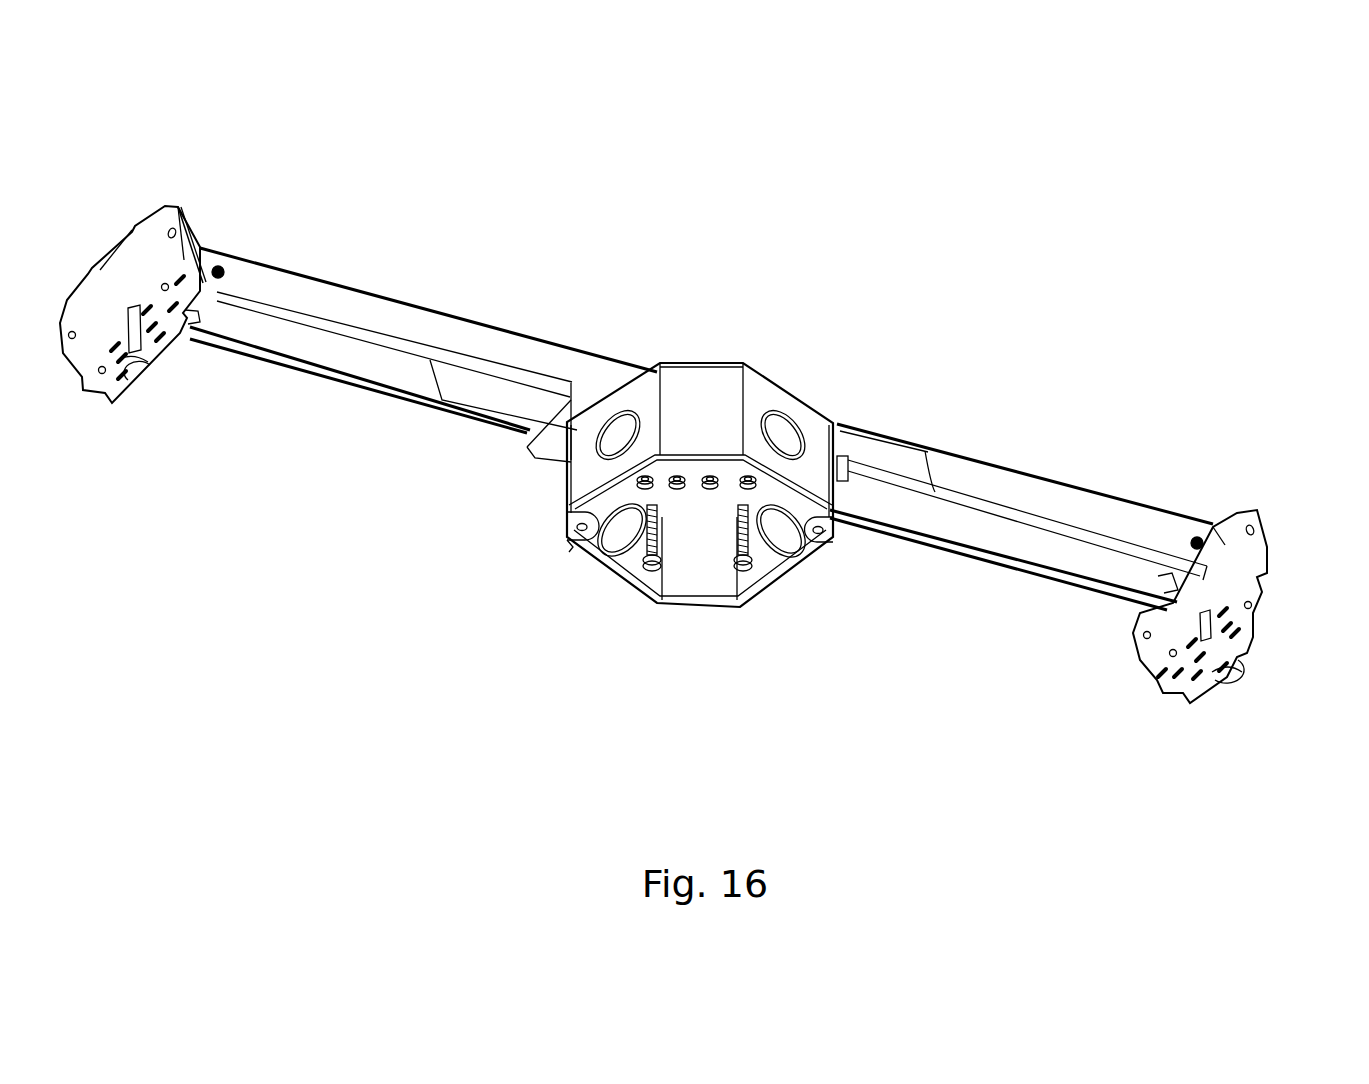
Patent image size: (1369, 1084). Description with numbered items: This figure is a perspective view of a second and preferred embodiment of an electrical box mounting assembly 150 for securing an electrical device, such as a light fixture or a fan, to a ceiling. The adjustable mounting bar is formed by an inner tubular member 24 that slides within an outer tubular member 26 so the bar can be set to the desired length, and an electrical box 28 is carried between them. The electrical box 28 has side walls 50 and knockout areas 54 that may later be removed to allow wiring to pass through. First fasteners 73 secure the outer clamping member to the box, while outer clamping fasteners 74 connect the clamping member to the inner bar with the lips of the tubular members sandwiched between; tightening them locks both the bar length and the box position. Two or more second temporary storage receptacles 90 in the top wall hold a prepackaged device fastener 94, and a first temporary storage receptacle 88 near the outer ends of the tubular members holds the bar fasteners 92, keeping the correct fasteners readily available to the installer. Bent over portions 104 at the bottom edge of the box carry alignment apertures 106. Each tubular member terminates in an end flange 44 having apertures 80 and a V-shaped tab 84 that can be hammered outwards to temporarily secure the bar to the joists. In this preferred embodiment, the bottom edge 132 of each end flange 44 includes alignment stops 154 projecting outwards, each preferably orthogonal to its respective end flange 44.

The electrical box mounting assembly 150 is at (877, 233).
The electrical box 28 is at (783, 393).
The knockout areas 54 is at (780, 433).
The side walls 50 is at (578, 485).
The outer clamping fasteners 74 is at (646, 474).
The first fasteners 73 is at (710, 475).
The device fastener 94 is at (652, 572).
The second temporary storage receptacles 90 is at (683, 515).
The bent over portions 104 is at (568, 522).
The alignment apertures 106 is at (573, 547).
The outer tubular member 26 is at (448, 350).
The inner tubular member 24 is at (1036, 517).
The first temporary storage receptacle 88 is at (1170, 536).
The apertures 80 is at (178, 208).
The V-shaped tab 84 is at (140, 353).
The end flange 44 is at (125, 280).
The bar fasteners 92 is at (222, 267).
The bottom edge 132 is at (163, 350).
The alignment stops 154 is at (135, 372).